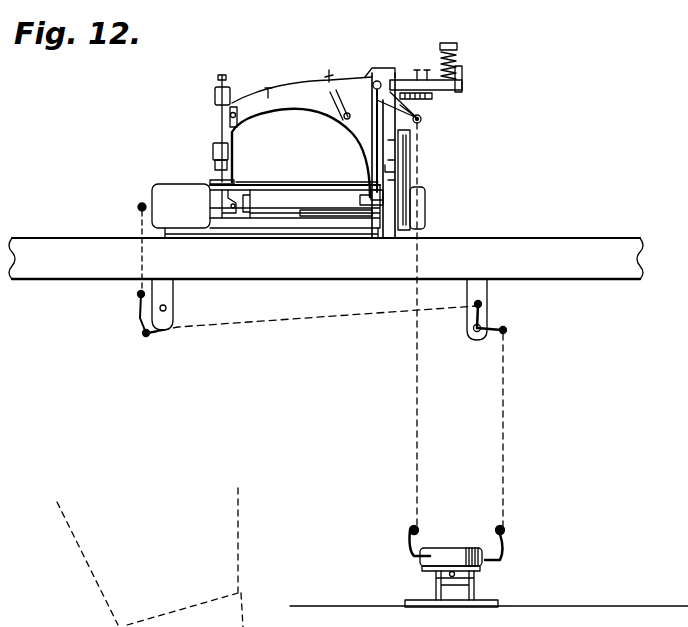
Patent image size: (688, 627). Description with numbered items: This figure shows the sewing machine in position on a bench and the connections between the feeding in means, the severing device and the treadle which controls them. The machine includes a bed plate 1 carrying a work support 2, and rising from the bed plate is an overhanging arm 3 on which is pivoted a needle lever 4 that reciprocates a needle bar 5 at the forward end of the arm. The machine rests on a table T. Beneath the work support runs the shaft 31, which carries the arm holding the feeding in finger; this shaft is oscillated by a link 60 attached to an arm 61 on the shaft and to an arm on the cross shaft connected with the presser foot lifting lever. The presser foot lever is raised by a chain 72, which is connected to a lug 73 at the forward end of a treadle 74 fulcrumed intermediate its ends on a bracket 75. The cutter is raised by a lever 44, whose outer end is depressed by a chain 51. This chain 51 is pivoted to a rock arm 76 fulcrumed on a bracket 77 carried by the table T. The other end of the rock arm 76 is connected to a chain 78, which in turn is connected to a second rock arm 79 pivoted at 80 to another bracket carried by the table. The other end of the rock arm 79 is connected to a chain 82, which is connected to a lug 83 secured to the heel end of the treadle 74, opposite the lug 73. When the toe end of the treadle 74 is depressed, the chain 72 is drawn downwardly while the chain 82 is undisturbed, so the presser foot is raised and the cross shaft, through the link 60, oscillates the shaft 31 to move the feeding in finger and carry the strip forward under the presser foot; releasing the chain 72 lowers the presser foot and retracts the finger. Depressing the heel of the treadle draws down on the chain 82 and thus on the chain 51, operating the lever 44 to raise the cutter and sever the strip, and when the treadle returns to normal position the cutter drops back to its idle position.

The table T is at (535, 252).
The bed plate 1 is at (292, 230).
The work support 2 is at (303, 189).
The shaft 31 is at (330, 214).
The needle bar 5 is at (218, 133).
The overhanging arm 3 is at (273, 117).
The needle lever 4 is at (310, 97).
The link 60 is at (374, 165).
The lever 44 is at (140, 203).
The chain 51 is at (137, 294).
The rock arm 76 is at (138, 308).
The bracket 77 is at (170, 297).
The chain 78 is at (316, 321).
The arm 61 is at (470, 290).
The second rock arm 79 is at (489, 316).
The pivot 80 is at (477, 334).
The chain 82 is at (504, 404).
The chain 72 is at (419, 445).
The lug 73 is at (406, 543).
The lug 83 is at (504, 543).
The treadle 74 is at (440, 565).
The bracket 75 is at (490, 604).